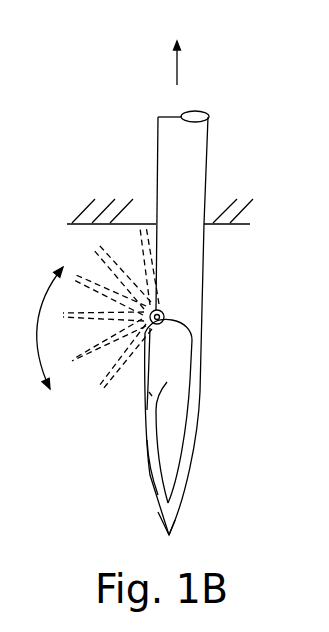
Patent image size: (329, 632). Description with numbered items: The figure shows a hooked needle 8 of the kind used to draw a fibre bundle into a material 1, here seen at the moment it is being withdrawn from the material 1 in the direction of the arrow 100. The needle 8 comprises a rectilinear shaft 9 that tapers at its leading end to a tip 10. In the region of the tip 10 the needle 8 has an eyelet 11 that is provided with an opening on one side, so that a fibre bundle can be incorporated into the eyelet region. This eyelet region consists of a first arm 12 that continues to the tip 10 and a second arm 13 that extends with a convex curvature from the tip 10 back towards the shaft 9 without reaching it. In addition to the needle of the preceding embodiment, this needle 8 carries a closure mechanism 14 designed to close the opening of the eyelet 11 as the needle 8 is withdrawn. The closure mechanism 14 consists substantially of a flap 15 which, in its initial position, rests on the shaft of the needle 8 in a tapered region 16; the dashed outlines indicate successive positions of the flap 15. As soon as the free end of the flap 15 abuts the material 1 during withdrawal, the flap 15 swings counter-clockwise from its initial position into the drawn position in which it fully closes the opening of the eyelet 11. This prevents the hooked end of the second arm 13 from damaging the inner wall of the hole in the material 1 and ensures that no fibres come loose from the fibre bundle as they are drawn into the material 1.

The arrow 100 is at (177, 66).
The rectilinear shaft 9 is at (195, 157).
The material 1 is at (105, 197).
The hooked needle 8 is at (232, 182).
The tapered region 16 is at (157, 258).
The first arm 12 is at (196, 370).
The eyelet 11 is at (177, 428).
The second arm 13 is at (155, 482).
The flap 15 is at (152, 392).
The tip 10 is at (168, 510).
The closure mechanism 14 is at (128, 379).